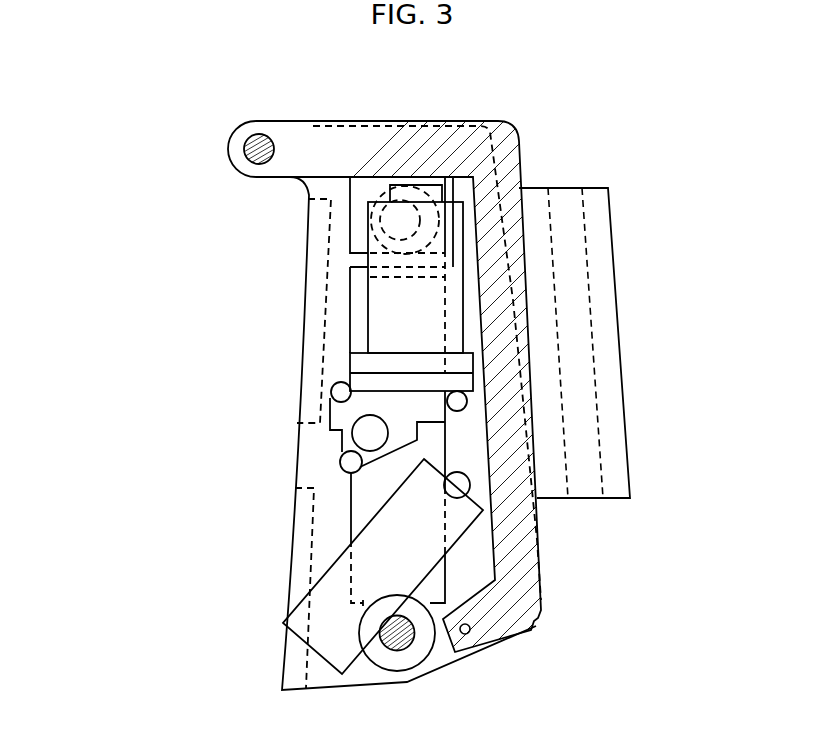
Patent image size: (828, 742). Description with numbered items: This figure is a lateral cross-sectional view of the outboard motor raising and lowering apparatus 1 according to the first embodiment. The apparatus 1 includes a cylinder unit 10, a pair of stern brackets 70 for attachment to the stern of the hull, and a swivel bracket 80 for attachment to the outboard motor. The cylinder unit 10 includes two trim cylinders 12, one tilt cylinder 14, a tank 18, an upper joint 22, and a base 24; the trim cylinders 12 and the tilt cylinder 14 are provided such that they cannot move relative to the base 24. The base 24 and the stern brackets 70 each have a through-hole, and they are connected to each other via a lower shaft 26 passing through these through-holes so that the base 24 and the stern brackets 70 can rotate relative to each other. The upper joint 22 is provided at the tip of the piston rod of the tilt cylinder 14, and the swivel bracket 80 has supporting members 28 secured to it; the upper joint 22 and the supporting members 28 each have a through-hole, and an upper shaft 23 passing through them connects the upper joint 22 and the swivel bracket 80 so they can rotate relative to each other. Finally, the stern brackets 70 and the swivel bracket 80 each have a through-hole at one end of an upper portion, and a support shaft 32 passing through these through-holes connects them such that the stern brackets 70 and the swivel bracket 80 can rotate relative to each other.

The outboard motor raising and lowering apparatus 1 is at (150, 87).
The cylinder unit 10 is at (328, 449).
The trim cylinder 12 is at (331, 545).
The tilt cylinder 14 is at (342, 284).
The tank 18 is at (410, 314).
The upper joint 22 is at (446, 212).
The upper shaft 23 is at (405, 212).
The base 24 is at (373, 668).
The lower shaft 26 is at (403, 636).
The supporting member 28 is at (353, 190).
The support shaft 32 is at (244, 150).
The stern bracket 70 is at (310, 360).
The swivel bracket 80 is at (490, 132).